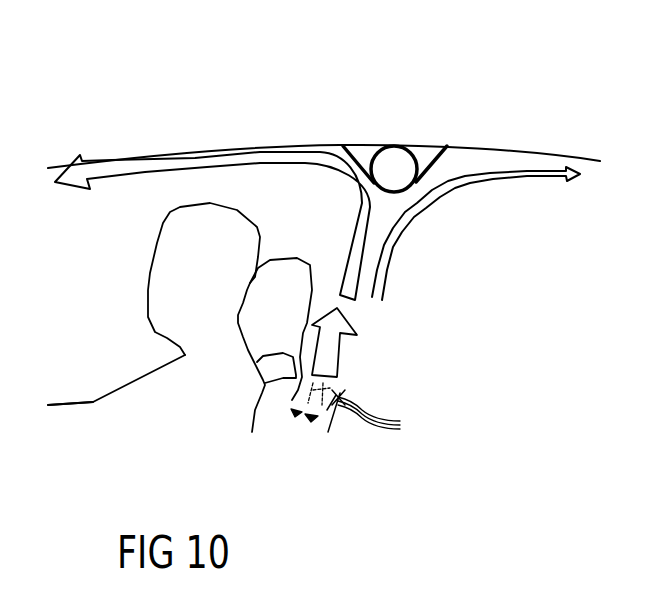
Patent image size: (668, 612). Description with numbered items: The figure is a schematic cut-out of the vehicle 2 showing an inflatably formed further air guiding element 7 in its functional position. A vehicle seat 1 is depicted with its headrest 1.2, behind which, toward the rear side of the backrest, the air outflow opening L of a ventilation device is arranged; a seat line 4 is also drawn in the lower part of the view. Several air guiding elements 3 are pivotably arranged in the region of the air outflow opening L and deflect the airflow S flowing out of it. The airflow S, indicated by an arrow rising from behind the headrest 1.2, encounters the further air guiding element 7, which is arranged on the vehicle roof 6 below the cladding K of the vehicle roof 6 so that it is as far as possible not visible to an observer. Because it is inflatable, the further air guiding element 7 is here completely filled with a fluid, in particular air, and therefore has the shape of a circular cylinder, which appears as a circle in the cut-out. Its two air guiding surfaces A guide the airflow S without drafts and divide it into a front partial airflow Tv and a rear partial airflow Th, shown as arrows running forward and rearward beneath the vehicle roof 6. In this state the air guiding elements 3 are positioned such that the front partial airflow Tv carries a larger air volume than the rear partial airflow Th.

The vehicle seat 1 is at (290, 444).
The headrest 1.2 is at (280, 292).
The vehicle 2 is at (318, 120).
The air guiding elements 3 is at (375, 416).
The seat surface line 4 is at (137, 400).
The vehicle roof 6 is at (462, 148).
The further air guiding element 7 is at (394, 166).
The front partial airflow Tv is at (107, 155).
The rear partial airflow Th is at (531, 172).
The air guiding surfaces A is at (337, 161).
The cladding K is at (440, 163).
The airflow S is at (345, 326).
The air outflow opening L is at (342, 382).